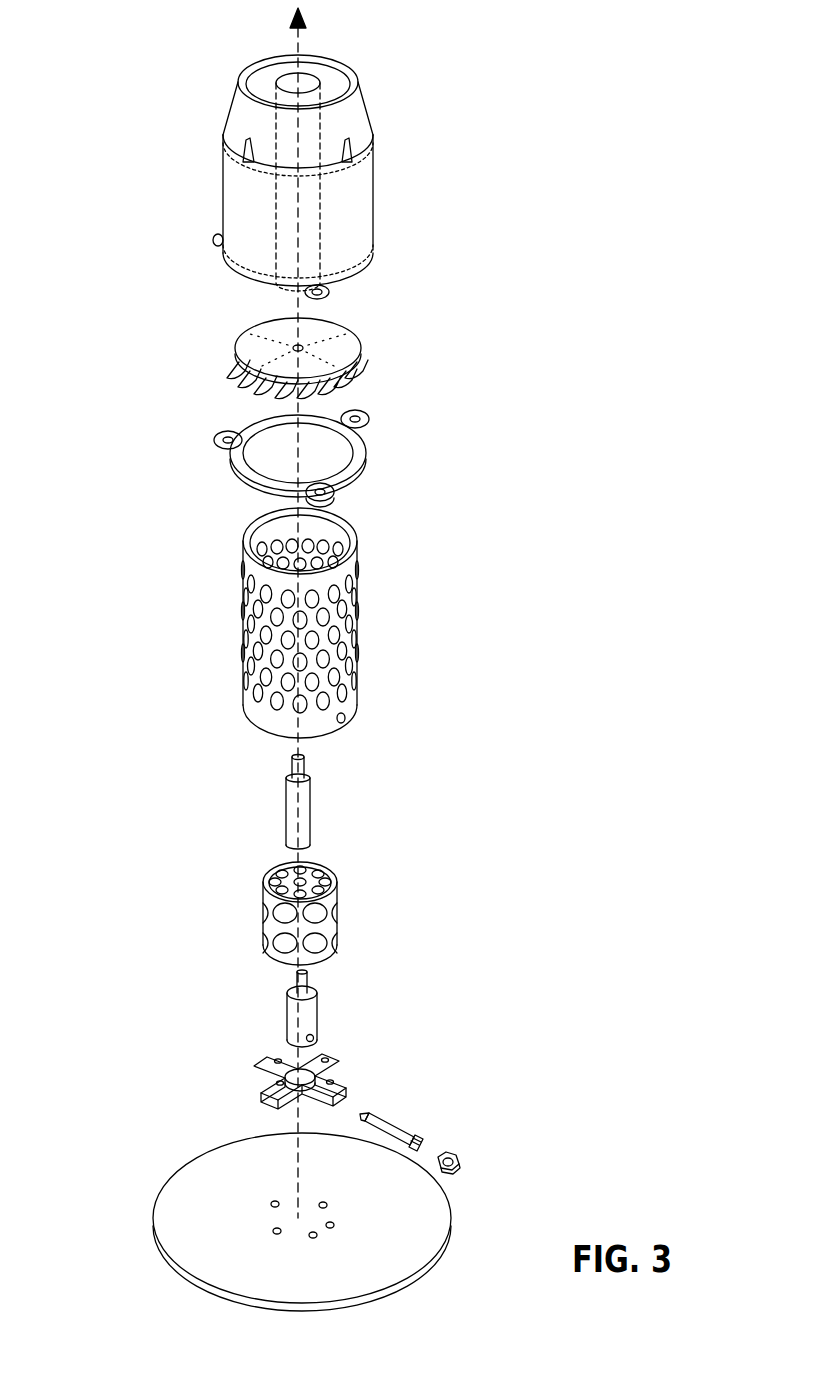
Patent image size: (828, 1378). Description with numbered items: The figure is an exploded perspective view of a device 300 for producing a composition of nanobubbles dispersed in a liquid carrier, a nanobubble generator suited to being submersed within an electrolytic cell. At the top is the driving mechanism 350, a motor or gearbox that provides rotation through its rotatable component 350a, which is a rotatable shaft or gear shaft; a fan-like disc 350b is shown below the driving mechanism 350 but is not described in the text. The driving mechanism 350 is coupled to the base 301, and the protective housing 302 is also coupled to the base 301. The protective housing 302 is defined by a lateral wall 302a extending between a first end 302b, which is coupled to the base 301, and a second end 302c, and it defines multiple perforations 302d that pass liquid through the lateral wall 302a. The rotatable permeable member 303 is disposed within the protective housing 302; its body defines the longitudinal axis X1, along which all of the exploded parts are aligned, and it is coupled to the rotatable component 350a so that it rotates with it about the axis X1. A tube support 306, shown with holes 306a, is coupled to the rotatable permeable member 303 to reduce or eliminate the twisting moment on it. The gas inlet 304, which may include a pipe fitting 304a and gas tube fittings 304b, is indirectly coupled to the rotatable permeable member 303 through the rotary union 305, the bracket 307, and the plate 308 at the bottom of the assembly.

The device 300 is at (160, 103).
The longitudinal axis X1 is at (300, 43).
The driving mechanism 350 is at (348, 177).
The rotatable component 350a is at (320, 96).
The fan impeller 350b is at (362, 351).
The base 301 is at (370, 460).
The protective housing 302 is at (343, 625).
The lateral wall 302a is at (358, 560).
The first end 302b is at (353, 525).
The second end 302c is at (265, 725).
The perforations 302d is at (340, 702).
The rotatable permeable member 303 is at (290, 803).
The tube support 306 is at (310, 913).
The hub holes 306a is at (318, 913).
The rotary union 305 is at (288, 997).
The bracket 307 is at (267, 1077).
The gas inlet 304 is at (467, 1107).
The pipe fitting 304a is at (397, 1125).
The gas tube fittings 304b is at (460, 1160).
The plate 308 is at (153, 1210).